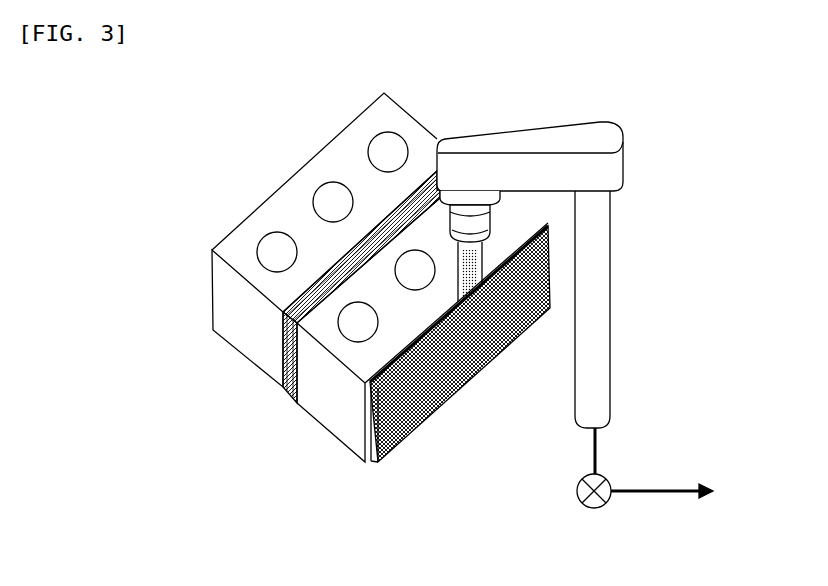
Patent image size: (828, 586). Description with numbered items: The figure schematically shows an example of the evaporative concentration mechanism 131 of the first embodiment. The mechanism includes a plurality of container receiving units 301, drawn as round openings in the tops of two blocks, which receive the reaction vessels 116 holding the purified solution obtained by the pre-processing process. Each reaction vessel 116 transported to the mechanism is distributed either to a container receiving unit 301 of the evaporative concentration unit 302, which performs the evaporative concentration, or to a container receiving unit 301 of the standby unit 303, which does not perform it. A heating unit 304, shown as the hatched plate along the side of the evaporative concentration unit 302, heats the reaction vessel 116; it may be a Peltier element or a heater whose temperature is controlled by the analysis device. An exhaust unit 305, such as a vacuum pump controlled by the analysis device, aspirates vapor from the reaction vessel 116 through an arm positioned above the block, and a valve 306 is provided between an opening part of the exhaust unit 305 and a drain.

The evaporative concentration mechanism 131 is at (220, 80).
The container receiving units 301 is at (388, 151).
The evaporative concentration unit 302 is at (333, 418).
The standby unit 303 is at (243, 345).
The heating unit 304 is at (378, 464).
The exhaust unit 305 is at (575, 122).
The valve 306 is at (600, 510).
The reaction vessels 116 is at (459, 273).